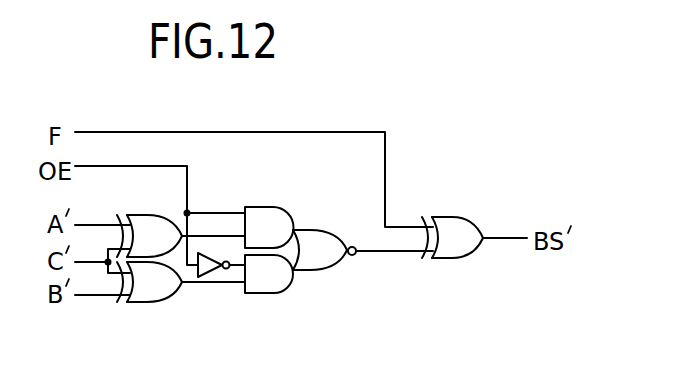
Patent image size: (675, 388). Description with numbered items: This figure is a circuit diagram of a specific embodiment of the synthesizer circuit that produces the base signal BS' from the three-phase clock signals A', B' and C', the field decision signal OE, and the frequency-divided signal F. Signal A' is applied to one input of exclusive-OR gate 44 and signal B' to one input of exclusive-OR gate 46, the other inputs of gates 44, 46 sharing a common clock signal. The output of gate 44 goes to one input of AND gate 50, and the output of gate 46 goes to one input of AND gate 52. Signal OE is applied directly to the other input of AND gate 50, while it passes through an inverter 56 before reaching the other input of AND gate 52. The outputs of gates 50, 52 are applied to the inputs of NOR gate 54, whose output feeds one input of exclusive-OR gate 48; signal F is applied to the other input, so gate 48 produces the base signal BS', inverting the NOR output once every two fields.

The exclusive-OR gate 44 is at (147, 214).
The exclusive-OR gate 46 is at (149, 303).
The exclusive-OR gate 48 is at (451, 219).
The AND gate 50 is at (275, 207).
The AND gate 52 is at (276, 295).
The NOR gate 54 is at (335, 267).
The inverter 56 is at (216, 278).